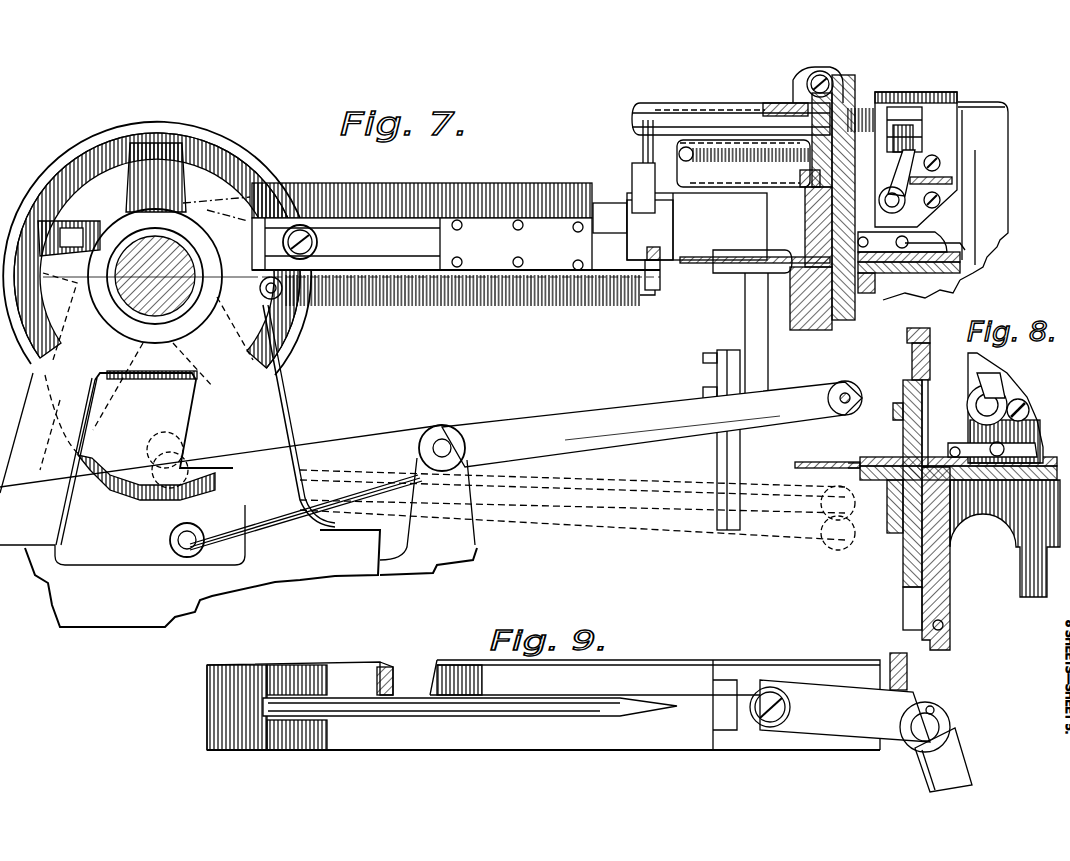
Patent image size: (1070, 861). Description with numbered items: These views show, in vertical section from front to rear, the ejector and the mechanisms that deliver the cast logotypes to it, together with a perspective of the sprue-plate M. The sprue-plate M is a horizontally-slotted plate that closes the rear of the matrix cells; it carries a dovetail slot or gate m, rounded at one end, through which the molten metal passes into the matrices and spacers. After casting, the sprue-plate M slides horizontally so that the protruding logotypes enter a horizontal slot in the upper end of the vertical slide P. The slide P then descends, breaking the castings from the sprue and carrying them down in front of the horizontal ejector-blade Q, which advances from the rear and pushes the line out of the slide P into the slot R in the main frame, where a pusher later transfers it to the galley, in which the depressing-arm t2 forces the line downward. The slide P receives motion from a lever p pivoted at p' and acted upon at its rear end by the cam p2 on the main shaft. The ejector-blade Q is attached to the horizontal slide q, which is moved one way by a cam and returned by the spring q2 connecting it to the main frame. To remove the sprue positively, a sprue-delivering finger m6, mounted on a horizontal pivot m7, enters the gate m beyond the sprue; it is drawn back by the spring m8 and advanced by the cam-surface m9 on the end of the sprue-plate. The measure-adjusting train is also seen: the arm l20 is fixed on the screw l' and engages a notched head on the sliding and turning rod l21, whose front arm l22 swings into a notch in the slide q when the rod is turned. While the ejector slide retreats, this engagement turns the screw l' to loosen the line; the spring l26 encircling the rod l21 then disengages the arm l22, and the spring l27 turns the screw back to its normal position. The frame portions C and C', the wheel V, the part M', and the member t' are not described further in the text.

In FIG. 7, the balance wheel V is at (331, 276).
In FIG. 7, the frame C is at (238, 466).
In FIG. 8, the frame C is at (891, 505).
In FIG. 7, the frame bracket C' is at (756, 401).
In FIG. 7, the horizontal slide q is at (617, 237).
In FIG. 7, the spring q2 is at (560, 300).
In FIG. 7, the second arm l22 is at (632, 143).
In FIG. 7, the sprue-delivering finger m6 is at (800, 98).
In FIG. 7, the horizontal pivot m7 is at (822, 72).
In FIG. 7, the cam-surface m9 is at (845, 95).
In FIG. 7, the spring m8 is at (718, 160).
In FIG. 7, the slot or gate m is at (805, 157).
In FIG. 8, the slot or gate m is at (920, 366).
In FIG. 9, the slot or gate m is at (490, 705).
In FIG. 7, the sprue-plate M is at (802, 250).
In FIG. 8, the sprue-plate M is at (944, 332).
In FIG. 9, the sprue-plate M is at (563, 722).
In FIG. 7, the guide M' is at (932, 293).
In FIG. 7, the vertical slide P is at (808, 225).
In FIG. 8, the vertical slide P is at (950, 537).
In FIG. 7, the ejector-blade Q is at (693, 255).
In FIG. 8, the ejector-blade Q is at (952, 468).
In FIG. 7, the slot R is at (887, 293).
In FIG. 8, the slot R is at (1005, 522).
In FIG. 7, the spring l26 is at (862, 112).
In FIG. 7, the horizontal sliding and turning rod l21 is at (913, 115).
In FIG. 7, the spring l27 is at (945, 178).
In FIG. 7, the arm l20 is at (890, 188).
In FIG. 8, the arm l20 is at (998, 388).
In FIG. 7, the screw l' is at (902, 232).
In FIG. 7, the depressing-arm t2 is at (950, 246).
In FIG. 8, the link t' is at (1004, 435).
In FIG. 7, the lever p is at (581, 461).
In FIG. 7, the pivot p' is at (237, 475).
In FIG. 7, the cam p2 is at (140, 515).